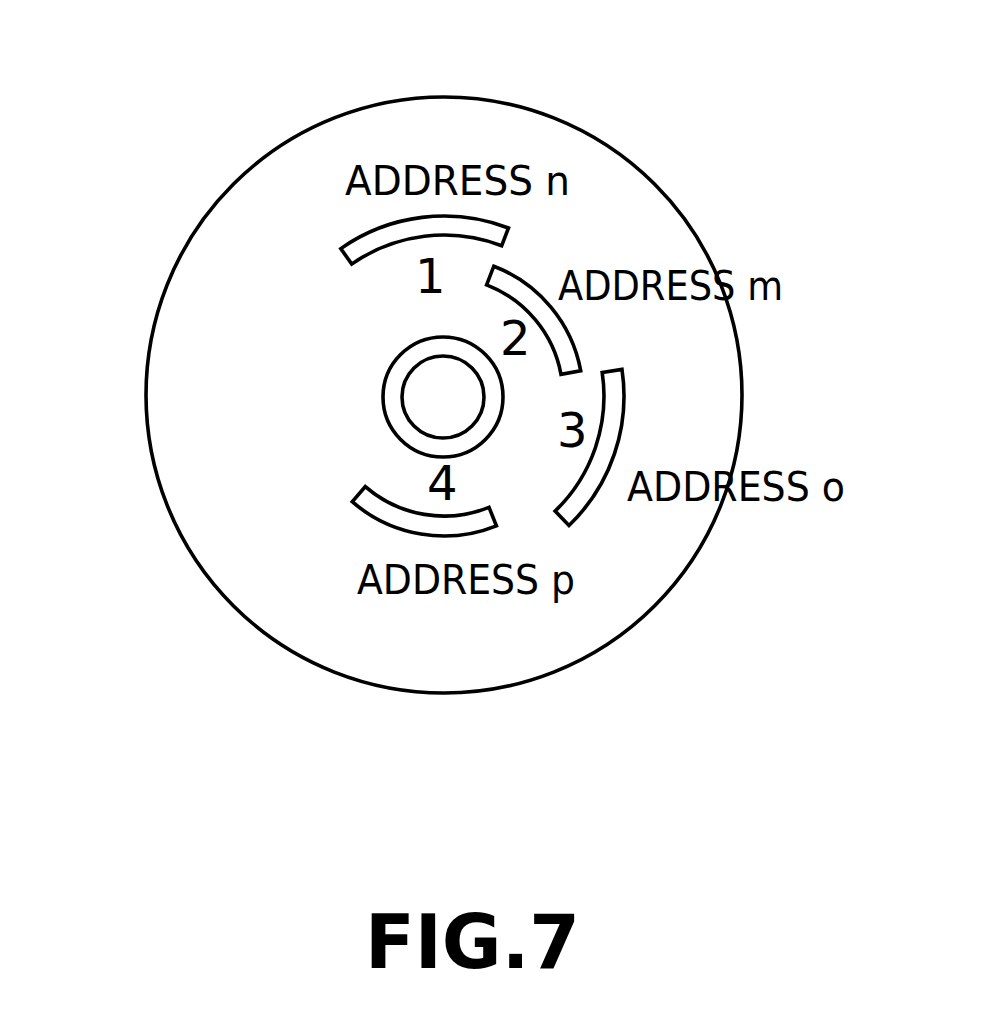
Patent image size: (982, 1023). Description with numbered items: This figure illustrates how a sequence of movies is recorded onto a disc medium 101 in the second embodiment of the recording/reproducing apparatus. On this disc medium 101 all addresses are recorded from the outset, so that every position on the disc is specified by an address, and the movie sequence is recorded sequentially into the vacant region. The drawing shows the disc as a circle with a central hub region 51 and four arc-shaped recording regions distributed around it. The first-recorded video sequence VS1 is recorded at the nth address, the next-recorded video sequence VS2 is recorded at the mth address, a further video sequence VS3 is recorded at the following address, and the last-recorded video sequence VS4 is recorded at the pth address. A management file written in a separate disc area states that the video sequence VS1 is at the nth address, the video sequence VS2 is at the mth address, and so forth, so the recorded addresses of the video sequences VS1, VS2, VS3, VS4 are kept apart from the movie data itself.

The disc medium 101 is at (637, 166).
The center hole / hub 51 is at (392, 375).
The first-recorded video sequence VS1 is at (358, 243).
The next-recorded video sequence VS2 is at (517, 283).
The video sequence VS3 is at (613, 422).
The last-recorded video sequence VS4 is at (370, 507).